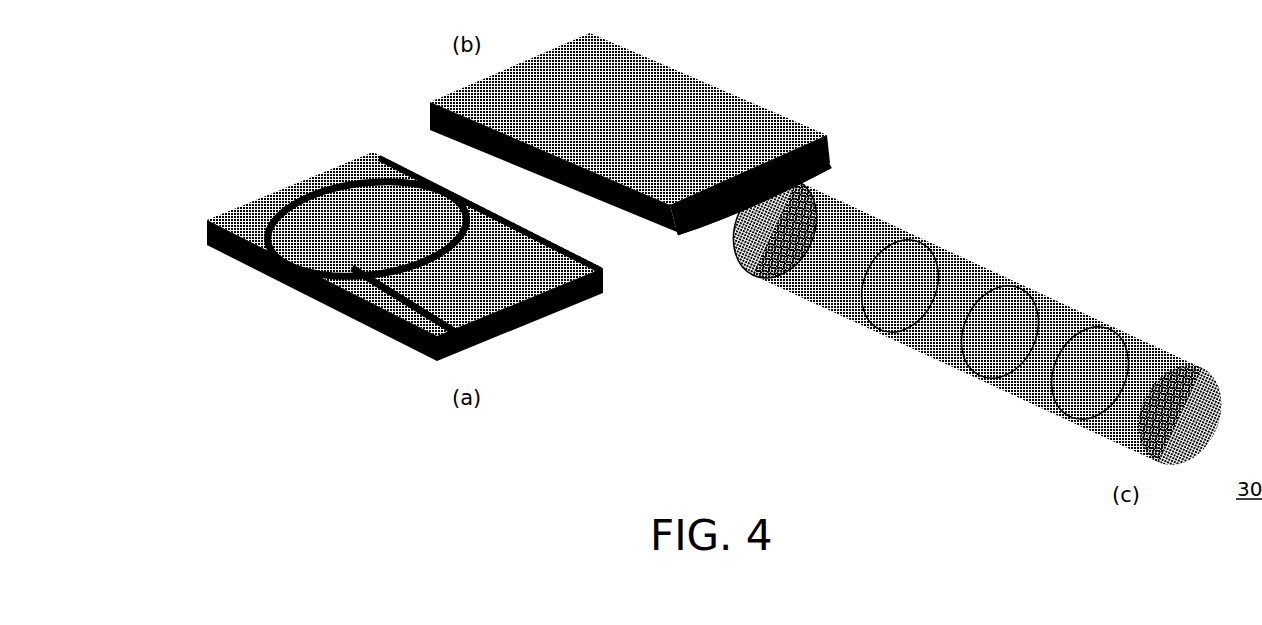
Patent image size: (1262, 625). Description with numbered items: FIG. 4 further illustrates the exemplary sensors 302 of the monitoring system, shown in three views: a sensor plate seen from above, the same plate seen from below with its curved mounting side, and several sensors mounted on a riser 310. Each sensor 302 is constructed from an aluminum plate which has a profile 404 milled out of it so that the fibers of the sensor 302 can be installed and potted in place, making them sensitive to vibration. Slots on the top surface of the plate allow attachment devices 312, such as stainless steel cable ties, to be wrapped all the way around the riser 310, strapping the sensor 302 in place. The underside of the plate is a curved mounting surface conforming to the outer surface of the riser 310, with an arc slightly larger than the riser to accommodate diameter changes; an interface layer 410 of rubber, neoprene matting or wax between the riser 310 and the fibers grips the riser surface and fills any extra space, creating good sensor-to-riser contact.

The sensor 302 is at (697, 245).
The riser 310 is at (977, 322).
The attachment device 312 is at (1029, 270).
The profile 404 is at (455, 217).
The interface layer 410 is at (666, 148).